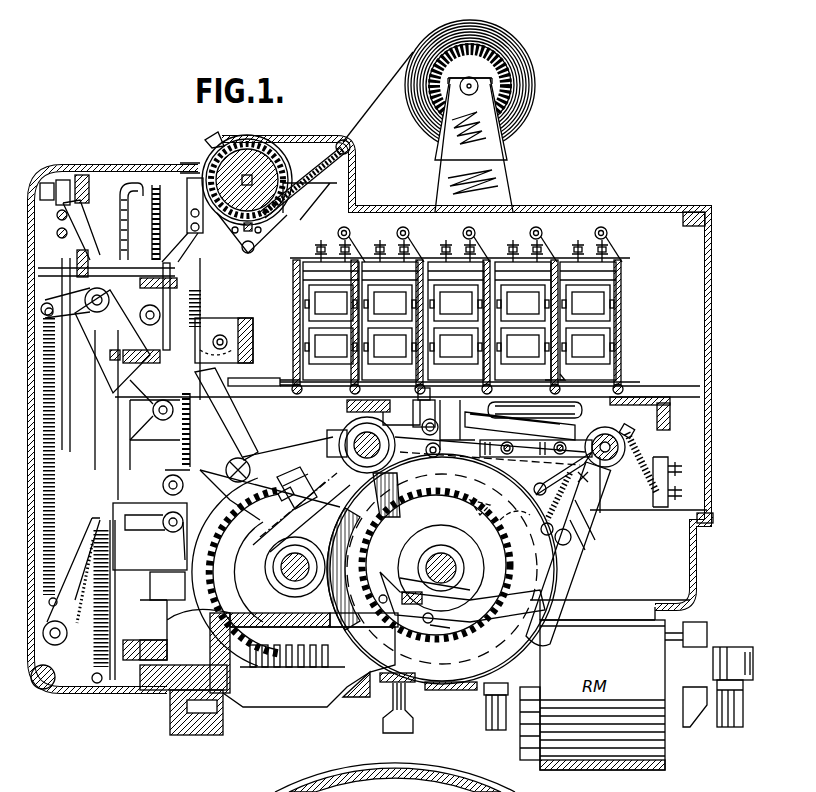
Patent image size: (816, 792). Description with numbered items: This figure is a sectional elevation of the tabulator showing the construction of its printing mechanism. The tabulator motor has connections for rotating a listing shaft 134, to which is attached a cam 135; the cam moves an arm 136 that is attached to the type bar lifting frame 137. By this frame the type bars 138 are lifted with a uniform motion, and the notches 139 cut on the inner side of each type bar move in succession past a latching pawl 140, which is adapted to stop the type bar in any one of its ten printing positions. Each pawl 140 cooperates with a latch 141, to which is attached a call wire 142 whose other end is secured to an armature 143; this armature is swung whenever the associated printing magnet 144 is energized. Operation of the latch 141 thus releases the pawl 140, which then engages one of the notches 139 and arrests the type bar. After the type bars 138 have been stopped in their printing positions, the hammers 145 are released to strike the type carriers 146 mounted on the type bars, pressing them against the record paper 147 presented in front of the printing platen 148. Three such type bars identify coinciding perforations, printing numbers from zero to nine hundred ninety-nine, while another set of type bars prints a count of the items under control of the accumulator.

The listing shaft 134 is at (434, 545).
The cam 135 is at (570, 558).
The arm 136 is at (297, 439).
The type bar lifting frame 137 is at (154, 575).
The type bars 138 is at (165, 448).
The notches 139 is at (220, 440).
The latching pawl 140 is at (212, 411).
The latch 141 is at (240, 378).
The call wire 142 is at (443, 386).
The armature 143 is at (562, 378).
The printing magnet 144 is at (593, 338).
The hammers 145 is at (122, 176).
The type carriers 146 is at (155, 188).
The record paper 147 is at (382, 90).
The printing platen 148 is at (250, 147).